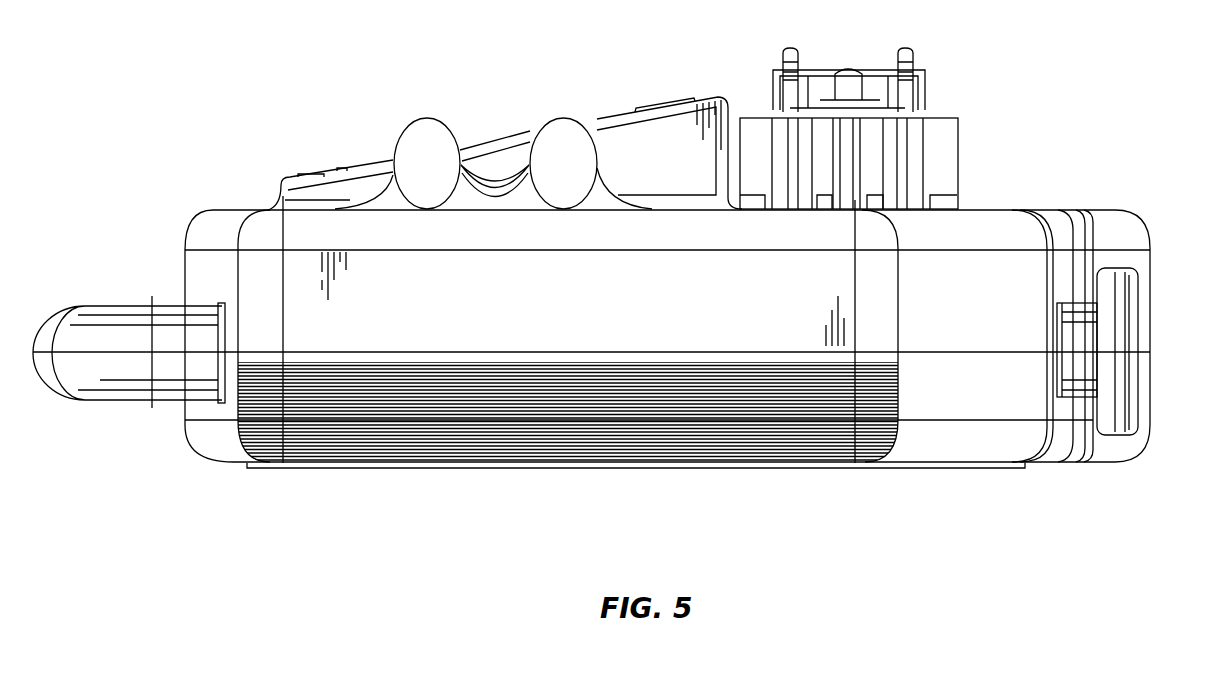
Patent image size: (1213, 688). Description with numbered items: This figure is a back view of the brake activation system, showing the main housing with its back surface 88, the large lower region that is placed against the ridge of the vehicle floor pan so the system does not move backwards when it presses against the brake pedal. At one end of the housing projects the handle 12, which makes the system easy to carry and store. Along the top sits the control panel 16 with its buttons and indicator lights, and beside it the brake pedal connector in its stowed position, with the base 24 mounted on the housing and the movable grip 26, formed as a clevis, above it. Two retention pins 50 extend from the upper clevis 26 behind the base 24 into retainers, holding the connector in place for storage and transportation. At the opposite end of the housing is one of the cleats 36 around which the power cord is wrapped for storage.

The handle 12 is at (48, 313).
The control panel 16 is at (624, 110).
The base 24 is at (960, 172).
The movable grip 26 is at (890, 70).
The retention pins 50 is at (786, 50).
The cleats 36 is at (1143, 397).
The back surface 88 is at (572, 333).